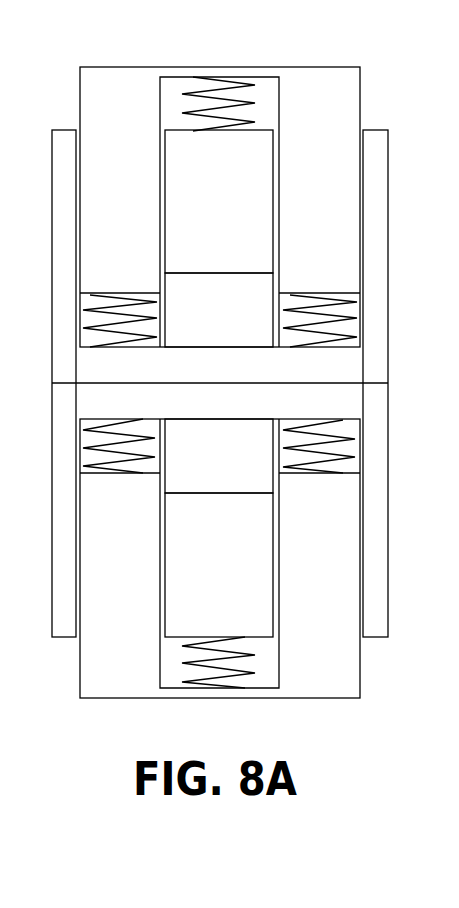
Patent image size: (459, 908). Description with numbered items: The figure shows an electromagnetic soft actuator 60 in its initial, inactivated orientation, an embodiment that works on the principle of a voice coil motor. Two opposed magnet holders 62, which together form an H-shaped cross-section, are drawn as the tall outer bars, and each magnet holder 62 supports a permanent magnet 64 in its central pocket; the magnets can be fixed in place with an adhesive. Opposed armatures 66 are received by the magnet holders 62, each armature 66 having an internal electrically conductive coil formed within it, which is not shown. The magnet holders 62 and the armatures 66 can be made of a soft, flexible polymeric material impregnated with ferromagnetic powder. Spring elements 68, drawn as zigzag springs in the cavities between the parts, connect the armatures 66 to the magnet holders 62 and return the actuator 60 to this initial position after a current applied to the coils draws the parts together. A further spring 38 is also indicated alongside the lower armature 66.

The electromagnetic soft actuator 60 is at (410, 85).
The magnet holder 62 is at (57, 263).
The permanent magnet 64 is at (233, 329).
The armature 66 is at (90, 95).
The spring element 68 is at (350, 313).
The spring 38 is at (350, 449).